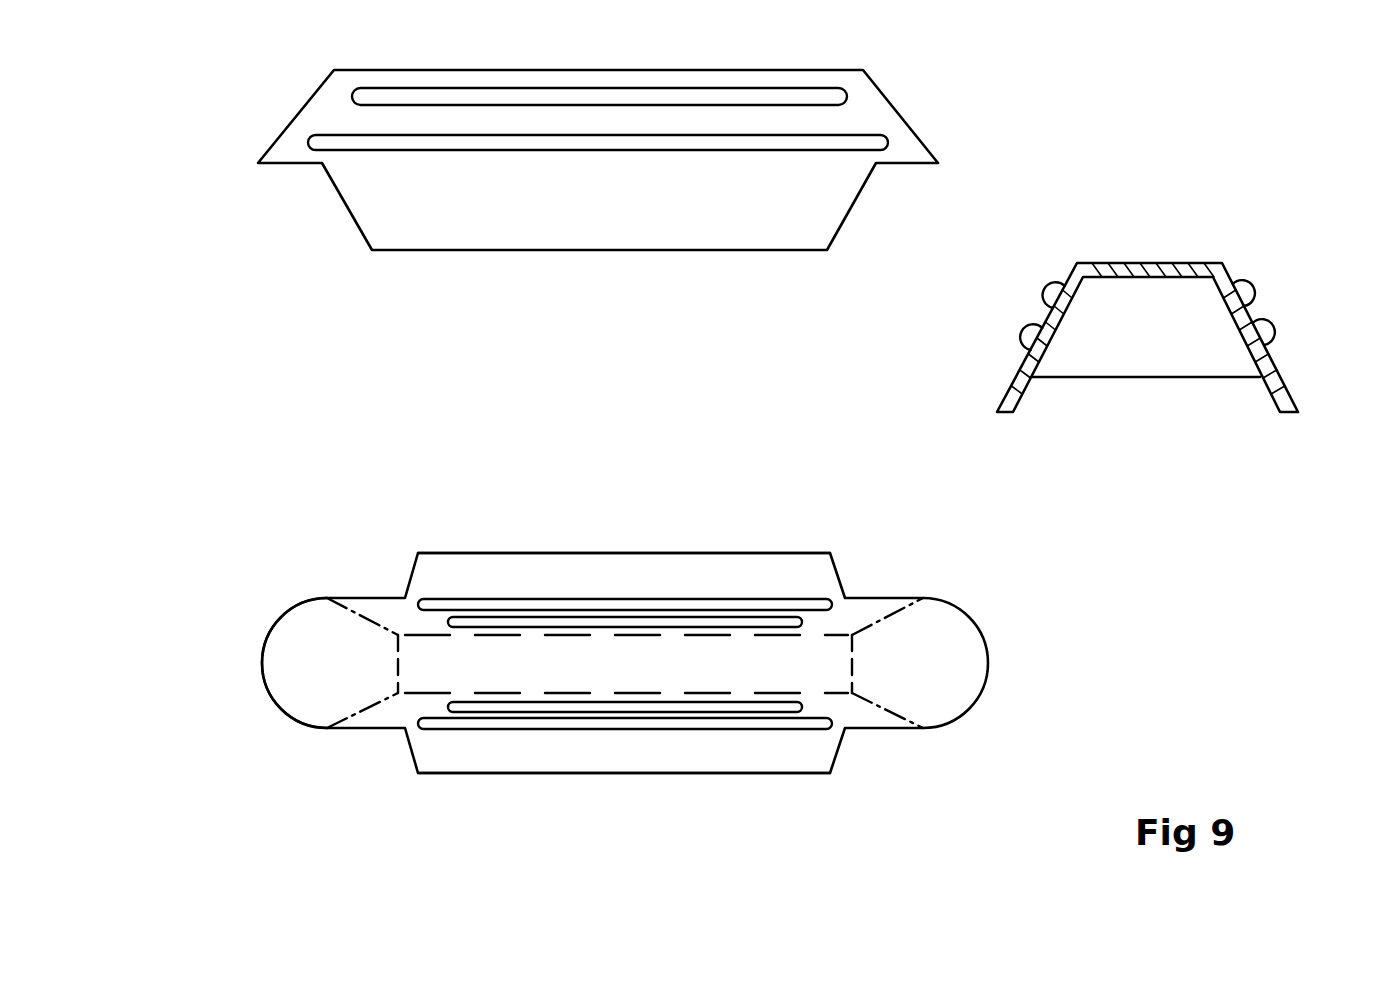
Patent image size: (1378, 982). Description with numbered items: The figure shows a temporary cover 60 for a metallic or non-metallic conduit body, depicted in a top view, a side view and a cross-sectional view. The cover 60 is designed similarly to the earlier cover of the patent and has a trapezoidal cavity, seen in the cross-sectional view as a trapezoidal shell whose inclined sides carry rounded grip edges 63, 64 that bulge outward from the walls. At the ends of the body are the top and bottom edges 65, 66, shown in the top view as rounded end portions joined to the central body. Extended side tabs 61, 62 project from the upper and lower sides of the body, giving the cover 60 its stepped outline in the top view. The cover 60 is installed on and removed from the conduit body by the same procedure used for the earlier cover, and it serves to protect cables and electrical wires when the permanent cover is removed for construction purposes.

The cover 60 is at (822, 62).
The extended side tab 61 is at (995, 401).
The extended side tab 62 is at (547, 255).
The rounded grip edge 63 is at (1045, 293).
The rounded grip edge 64 is at (497, 88).
The top edge 65 is at (268, 168).
The bottom edge 66 is at (940, 168).